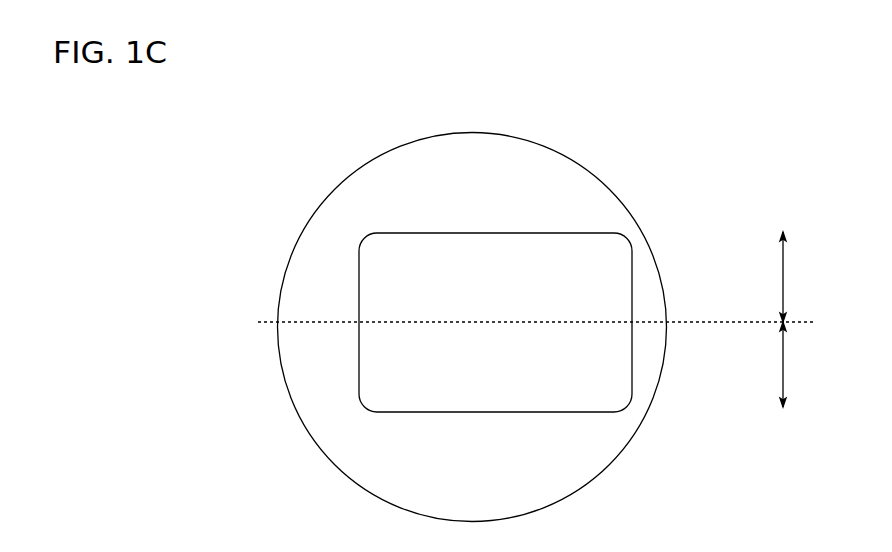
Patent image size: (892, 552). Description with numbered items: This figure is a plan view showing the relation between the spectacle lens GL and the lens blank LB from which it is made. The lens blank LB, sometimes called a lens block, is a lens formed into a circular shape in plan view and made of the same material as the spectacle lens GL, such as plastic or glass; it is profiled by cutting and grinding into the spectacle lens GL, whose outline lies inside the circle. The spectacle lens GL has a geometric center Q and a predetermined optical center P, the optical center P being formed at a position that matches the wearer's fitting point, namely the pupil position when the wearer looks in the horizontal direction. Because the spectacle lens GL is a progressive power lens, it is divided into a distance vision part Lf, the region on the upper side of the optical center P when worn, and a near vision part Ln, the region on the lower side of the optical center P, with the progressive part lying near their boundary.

The lens blank LB is at (662, 281).
The spectacle lens GL is at (632, 333).
The geometric center Q is at (487, 307).
The optical center P is at (547, 307).
The distance vision part Lf is at (795, 277).
The near vision part Ln is at (794, 364).